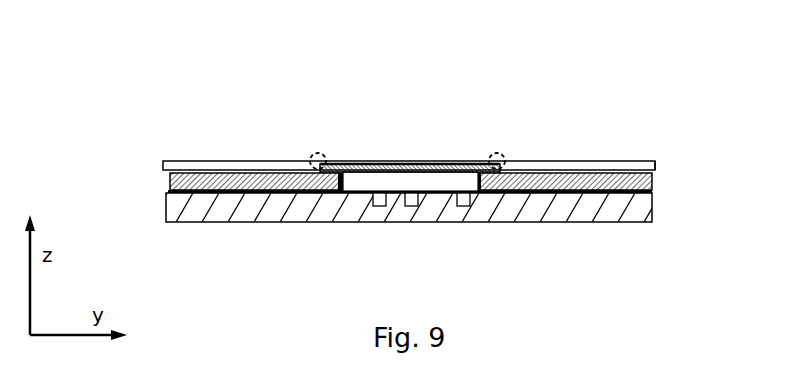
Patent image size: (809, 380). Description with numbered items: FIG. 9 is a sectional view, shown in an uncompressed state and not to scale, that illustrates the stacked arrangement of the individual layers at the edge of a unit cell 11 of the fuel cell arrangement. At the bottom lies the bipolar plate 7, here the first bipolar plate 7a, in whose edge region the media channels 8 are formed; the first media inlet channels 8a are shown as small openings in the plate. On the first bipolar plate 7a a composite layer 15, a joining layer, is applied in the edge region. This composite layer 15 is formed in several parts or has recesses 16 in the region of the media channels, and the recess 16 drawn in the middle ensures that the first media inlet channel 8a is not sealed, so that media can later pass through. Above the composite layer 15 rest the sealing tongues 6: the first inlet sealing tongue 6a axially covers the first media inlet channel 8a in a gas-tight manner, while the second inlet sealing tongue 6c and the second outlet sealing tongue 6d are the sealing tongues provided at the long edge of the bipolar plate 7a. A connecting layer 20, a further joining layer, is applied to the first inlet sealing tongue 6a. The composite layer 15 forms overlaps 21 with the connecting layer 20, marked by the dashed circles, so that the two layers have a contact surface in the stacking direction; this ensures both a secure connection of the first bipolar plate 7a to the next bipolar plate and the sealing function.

The sealing tongue 6 is at (409, 115).
The first inlet sealing tongue 6a is at (373, 164).
The second inlet sealing tongue 6c is at (222, 161).
The second outlet sealing tongue 6d is at (600, 162).
The bipolar plate 7 is at (385, 236).
The first bipolar plate 7a is at (218, 215).
The media channels 8 is at (421, 237).
The first media inlet channels 8a is at (438, 200).
The unit cell 11 is at (670, 247).
The composite layer 15 is at (273, 182).
The recesses 16 is at (358, 188).
The connecting layer 20 is at (431, 162).
The overlaps 21 is at (318, 153).